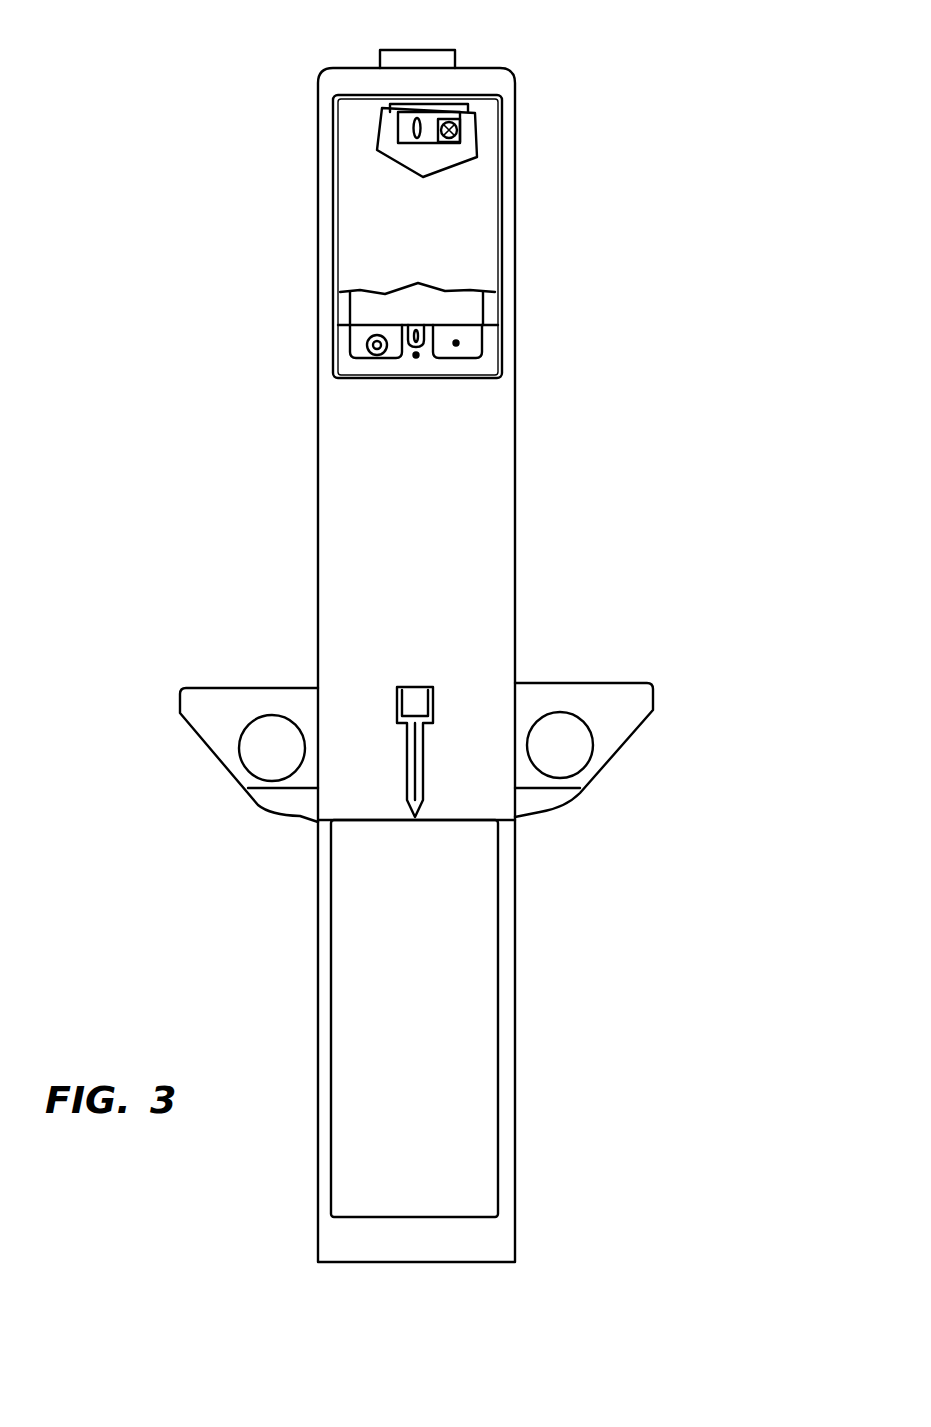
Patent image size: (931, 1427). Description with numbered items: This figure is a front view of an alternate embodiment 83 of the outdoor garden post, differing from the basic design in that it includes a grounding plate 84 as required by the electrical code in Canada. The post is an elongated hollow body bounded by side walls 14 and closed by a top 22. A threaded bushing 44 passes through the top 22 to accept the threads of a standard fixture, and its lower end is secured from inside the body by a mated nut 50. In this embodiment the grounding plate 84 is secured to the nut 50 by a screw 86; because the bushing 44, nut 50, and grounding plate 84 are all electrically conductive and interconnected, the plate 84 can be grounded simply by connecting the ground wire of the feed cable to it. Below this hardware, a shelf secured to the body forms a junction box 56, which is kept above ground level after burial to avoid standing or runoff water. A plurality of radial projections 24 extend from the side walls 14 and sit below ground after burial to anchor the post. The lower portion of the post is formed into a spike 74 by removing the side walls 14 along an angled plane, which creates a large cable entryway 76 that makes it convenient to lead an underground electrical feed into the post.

The side walls 14 is at (442, 517).
The closed top 22 is at (340, 68).
The radial projections 24 is at (230, 724).
The bushing 44 is at (423, 55).
The nut 50 is at (433, 102).
The junction box 56 is at (467, 268).
The spike 74 is at (503, 1085).
The cable entryway 76 is at (348, 1002).
The alternate embodiment 83 is at (150, 446).
The grounding plate 84 is at (435, 163).
The screw 86 is at (457, 133).